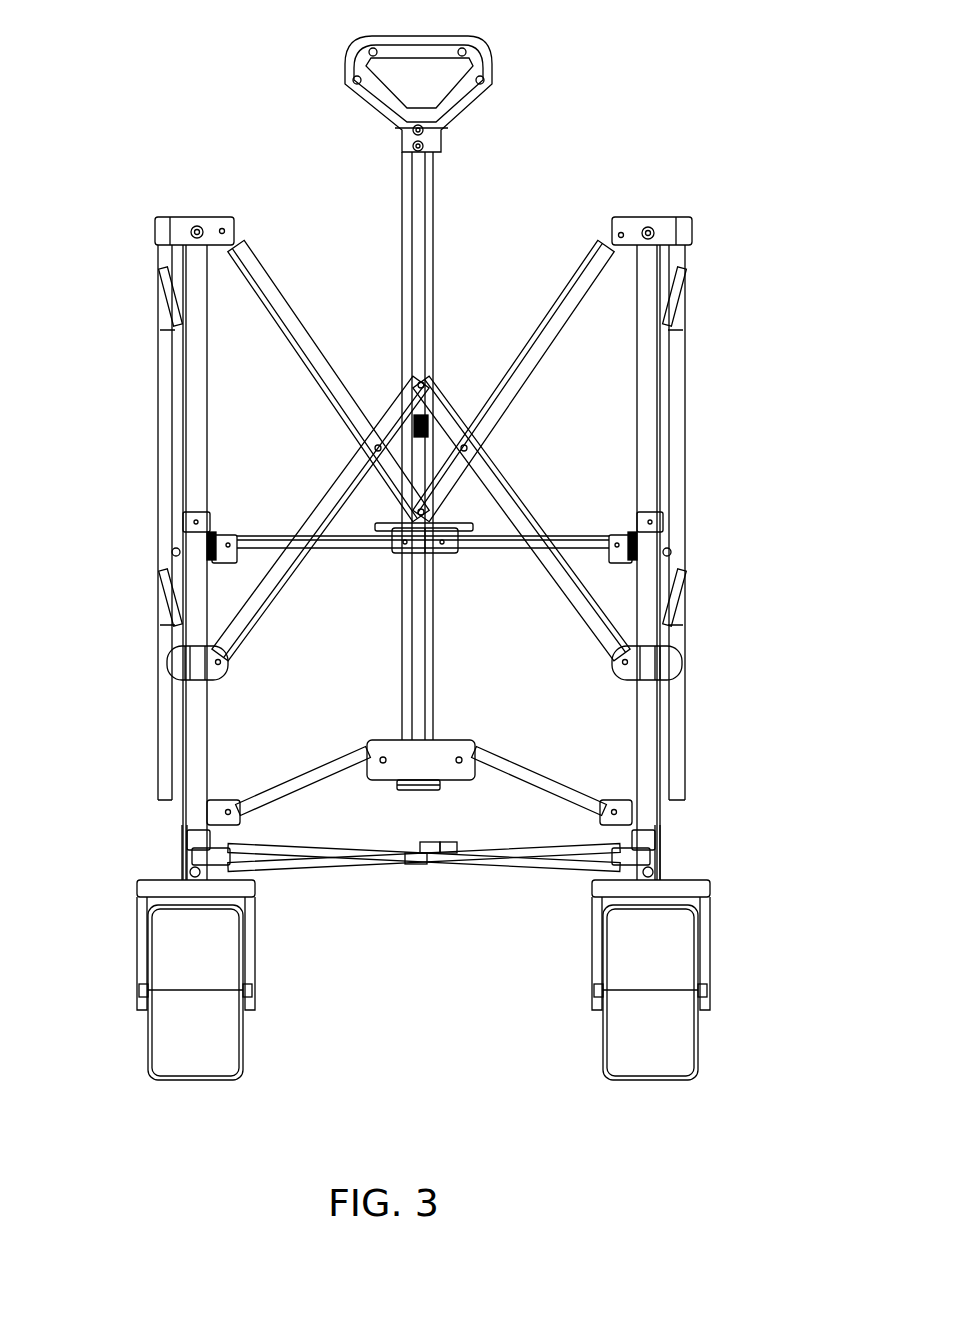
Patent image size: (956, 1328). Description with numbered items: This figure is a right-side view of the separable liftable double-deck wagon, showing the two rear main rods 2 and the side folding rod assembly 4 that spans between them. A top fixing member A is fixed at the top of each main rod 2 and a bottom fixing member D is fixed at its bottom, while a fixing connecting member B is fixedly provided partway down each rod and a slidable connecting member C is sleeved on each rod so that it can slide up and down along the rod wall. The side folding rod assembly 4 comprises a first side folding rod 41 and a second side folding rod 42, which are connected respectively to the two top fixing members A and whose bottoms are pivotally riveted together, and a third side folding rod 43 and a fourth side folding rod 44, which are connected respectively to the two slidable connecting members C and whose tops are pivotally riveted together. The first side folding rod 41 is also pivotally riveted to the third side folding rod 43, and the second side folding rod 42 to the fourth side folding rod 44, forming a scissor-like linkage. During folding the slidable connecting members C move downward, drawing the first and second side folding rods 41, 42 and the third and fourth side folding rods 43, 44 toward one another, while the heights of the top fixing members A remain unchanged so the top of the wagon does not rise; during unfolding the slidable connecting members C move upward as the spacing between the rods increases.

The rear main rod 2 is at (640, 340).
The side folding rod assembly 4 is at (258, 375).
The first side folding rod 41 is at (292, 330).
The second side folding rod 42 is at (549, 330).
The third side folding rod 43 is at (268, 600).
The fourth side folding rod 44 is at (578, 600).
The top fixing member A is at (665, 232).
The fixing connecting member B is at (658, 523).
The slidable connecting member C is at (665, 660).
The bottom fixing member D is at (665, 848).